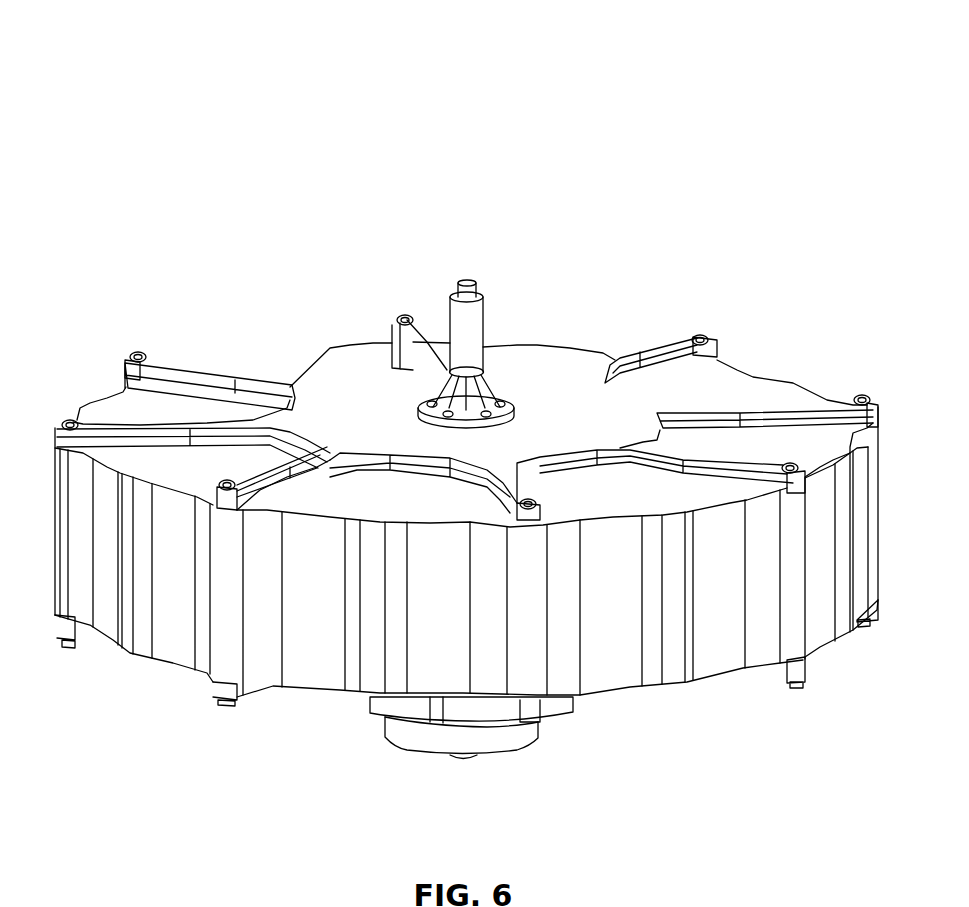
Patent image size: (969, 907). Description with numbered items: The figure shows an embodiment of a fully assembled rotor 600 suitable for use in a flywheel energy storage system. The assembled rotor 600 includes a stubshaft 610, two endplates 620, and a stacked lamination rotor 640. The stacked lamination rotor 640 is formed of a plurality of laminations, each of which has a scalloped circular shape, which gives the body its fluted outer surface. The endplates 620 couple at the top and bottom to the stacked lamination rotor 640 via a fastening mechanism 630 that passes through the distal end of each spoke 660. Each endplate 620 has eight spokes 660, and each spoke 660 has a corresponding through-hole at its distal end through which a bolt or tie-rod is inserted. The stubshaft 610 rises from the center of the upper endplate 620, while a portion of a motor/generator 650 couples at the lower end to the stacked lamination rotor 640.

The assembled rotor 600 is at (290, 110).
The stubshaft 610 is at (497, 315).
The endplate 620 is at (341, 392).
The fastening mechanism 630 is at (66, 400).
The stacked lamination rotor 640 is at (115, 655).
The motor/generator 650 is at (379, 747).
The spoke 660 is at (165, 348).